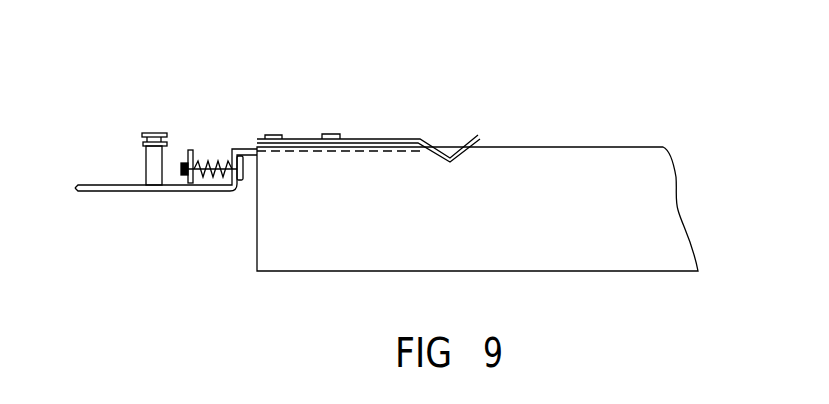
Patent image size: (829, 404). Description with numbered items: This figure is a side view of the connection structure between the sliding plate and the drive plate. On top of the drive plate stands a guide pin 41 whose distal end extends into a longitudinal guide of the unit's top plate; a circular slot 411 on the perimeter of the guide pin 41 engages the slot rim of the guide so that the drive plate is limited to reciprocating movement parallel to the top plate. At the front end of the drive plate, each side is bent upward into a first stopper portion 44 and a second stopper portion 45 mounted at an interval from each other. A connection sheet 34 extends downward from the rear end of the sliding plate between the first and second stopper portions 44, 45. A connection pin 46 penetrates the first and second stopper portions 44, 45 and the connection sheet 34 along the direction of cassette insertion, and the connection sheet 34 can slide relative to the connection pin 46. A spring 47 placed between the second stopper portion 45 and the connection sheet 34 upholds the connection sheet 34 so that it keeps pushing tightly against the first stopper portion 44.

The connection sheet 34 is at (228, 148).
The guide pin 41 is at (147, 168).
The circular slot 411 is at (143, 135).
The first stopper portion 44 is at (240, 183).
The second stopper portion 45 is at (186, 150).
The connection pin 46 is at (215, 182).
The spring 47 is at (212, 150).